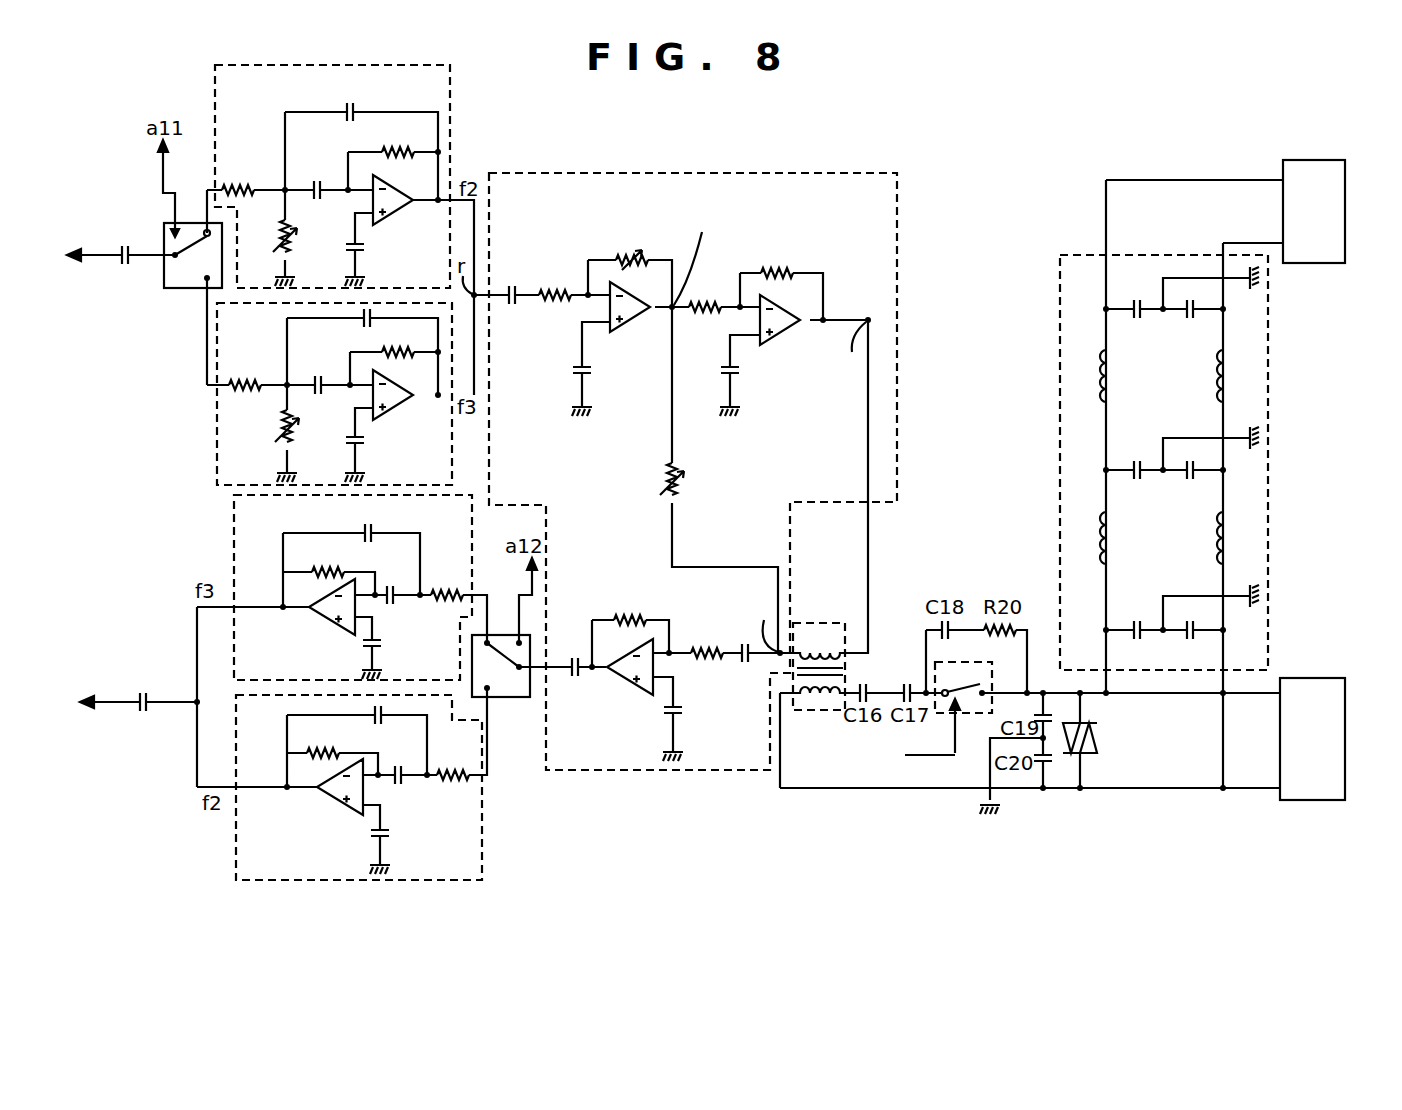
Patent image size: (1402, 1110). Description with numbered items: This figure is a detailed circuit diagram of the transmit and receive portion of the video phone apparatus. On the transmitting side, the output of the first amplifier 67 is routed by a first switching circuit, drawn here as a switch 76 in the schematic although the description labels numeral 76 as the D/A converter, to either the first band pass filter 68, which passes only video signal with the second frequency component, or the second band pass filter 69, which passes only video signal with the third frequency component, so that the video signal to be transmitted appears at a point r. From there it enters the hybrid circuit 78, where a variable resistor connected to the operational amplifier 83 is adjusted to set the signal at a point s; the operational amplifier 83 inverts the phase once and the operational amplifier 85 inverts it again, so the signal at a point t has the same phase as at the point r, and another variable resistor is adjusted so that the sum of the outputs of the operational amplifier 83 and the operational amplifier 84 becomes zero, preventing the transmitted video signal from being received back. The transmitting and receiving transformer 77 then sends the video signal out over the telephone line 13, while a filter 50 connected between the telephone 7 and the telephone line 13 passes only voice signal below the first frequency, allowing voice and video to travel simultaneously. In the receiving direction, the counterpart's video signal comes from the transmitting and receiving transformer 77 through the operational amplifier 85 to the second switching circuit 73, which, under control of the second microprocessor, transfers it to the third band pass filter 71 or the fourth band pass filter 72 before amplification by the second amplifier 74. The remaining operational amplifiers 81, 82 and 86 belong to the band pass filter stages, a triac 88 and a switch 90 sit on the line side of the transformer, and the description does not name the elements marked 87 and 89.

The telephone 7 is at (1318, 263).
The telephone line 13 is at (1313, 800).
The filter 50 is at (1268, 385).
The first amplifier 67 is at (104, 247).
The first band pass filter 68 is at (215, 80).
The second band pass filter 69 is at (217, 440).
The third band pass filter 71 is at (234, 530).
The fourth band pass filter 72 is at (236, 844).
The second switching circuit 73 is at (516, 697).
The second amplifier 74 is at (120, 694).
The D/A converter 76 is at (185, 290).
The transmitting and receiving transformer 77 is at (828, 623).
The hybrid circuit 78 is at (833, 173).
The operational amplifier 81 is at (400, 207).
The operational amplifier 82 is at (400, 402).
The operational amplifier 83 is at (636, 320).
The operational amplifier 84 is at (790, 322).
The operational amplifier 85 is at (630, 672).
The operational amplifier 86 is at (338, 795).
The operational amplifier 87 is at (326, 616).
The triac 88 is at (1088, 752).
The coupling transformer 89 is at (866, 672).
The switch 90 is at (935, 676).